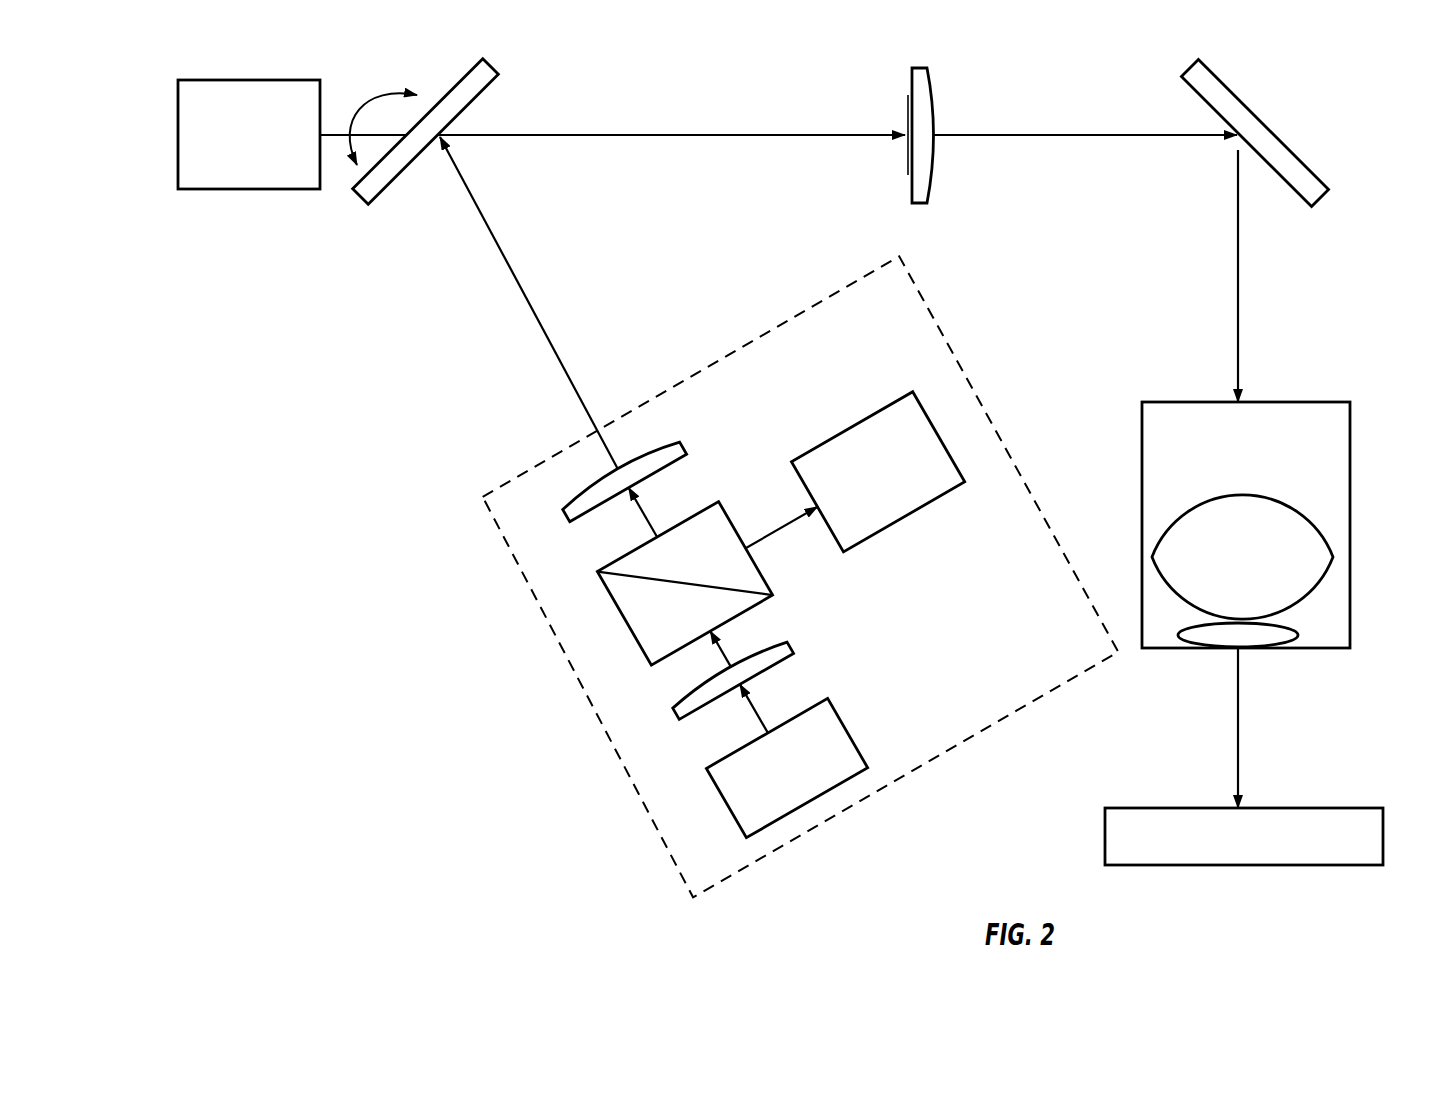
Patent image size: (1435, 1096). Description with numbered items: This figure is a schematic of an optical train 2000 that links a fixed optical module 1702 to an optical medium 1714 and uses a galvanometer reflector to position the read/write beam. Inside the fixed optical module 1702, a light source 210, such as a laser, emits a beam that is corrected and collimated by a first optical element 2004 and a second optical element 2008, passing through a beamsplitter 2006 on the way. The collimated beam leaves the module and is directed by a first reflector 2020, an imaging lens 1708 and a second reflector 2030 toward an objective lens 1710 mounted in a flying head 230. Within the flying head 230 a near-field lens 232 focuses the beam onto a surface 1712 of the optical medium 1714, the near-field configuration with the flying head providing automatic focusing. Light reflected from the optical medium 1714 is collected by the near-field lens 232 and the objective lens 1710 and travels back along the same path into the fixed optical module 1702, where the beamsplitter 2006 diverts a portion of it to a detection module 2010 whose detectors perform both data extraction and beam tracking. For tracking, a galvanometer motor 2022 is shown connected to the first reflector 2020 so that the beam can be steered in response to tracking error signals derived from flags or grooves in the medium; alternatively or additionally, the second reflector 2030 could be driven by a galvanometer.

The optical train 2000 is at (500, 798).
The light source 210 is at (851, 738).
The first optical element 2004 is at (792, 643).
The beamsplitter 2006 is at (720, 562).
The second optical element 2008 is at (685, 452).
The detection module 2010 is at (877, 411).
The fixed optical module 1702 is at (950, 350).
The first reflector 2020 is at (443, 93).
The galvanometer motor 2022 is at (272, 190).
The imaging lens 1708 is at (930, 94).
The reflector 2030 is at (1233, 85).
The flying head 230 is at (1262, 402).
The objective lens 1710 is at (1237, 494).
The near-field lens 232 is at (1293, 628).
The surface 1712 is at (1262, 807).
The optical medium 1714 is at (1105, 841).